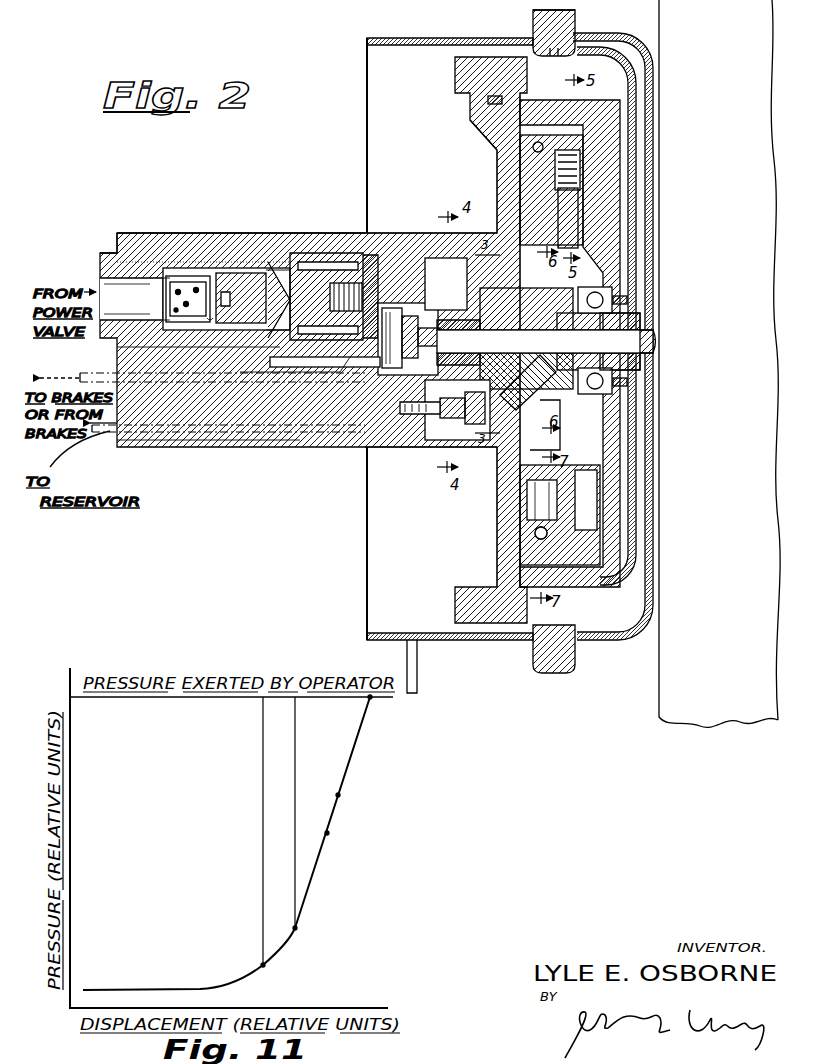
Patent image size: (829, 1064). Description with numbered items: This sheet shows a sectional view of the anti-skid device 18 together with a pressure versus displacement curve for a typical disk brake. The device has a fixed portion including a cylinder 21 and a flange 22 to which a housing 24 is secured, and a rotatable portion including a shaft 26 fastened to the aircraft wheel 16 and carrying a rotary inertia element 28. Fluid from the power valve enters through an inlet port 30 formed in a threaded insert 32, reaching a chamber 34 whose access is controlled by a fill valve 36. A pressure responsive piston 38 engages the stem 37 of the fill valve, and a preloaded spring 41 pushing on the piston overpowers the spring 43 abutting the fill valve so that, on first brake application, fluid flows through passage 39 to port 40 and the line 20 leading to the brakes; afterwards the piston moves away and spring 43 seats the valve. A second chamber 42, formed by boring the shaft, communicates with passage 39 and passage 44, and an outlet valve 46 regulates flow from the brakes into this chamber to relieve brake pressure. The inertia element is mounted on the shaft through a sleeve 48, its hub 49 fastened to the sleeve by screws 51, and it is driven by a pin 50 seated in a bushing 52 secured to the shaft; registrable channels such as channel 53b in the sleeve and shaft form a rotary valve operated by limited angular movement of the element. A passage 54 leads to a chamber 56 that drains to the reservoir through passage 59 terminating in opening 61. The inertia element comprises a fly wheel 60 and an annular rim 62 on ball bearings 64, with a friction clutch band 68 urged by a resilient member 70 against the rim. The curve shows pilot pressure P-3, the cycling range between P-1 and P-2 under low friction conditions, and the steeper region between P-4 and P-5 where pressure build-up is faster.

In FIG. 2, the aircraft wheel 16 is at (669, 698).
In FIG. 2, the anti-skid device 18 is at (336, 454).
In FIG. 2, the line 20 is at (80, 380).
In FIG. 2, the cylinder 21 is at (372, 236).
In FIG. 2, the flange 22 is at (507, 148).
In FIG. 2, the housing 24 is at (618, 133).
In FIG. 2, the shaft 26 is at (632, 330).
In FIG. 2, the rotary inertia element 28 is at (602, 197).
In FIG. 2, the inlet port 30 is at (108, 289).
In FIG. 2, the insert 32 is at (127, 262).
In FIG. 2, the chamber 34 is at (298, 278).
In FIG. 2, the fill valve 36 is at (237, 290).
In FIG. 2, the stem 37 is at (300, 262).
In FIG. 2, the pressure responsive piston 38 is at (352, 262).
In FIG. 2, the passage 39 is at (280, 420).
In FIG. 2, the port 40 is at (137, 374).
In FIG. 2, the spring 41 is at (355, 237).
In FIG. 2, the second chamber 42 is at (656, 346).
In FIG. 2, the spring 43 is at (192, 285).
In FIG. 2, the passage 44 is at (363, 367).
In FIG. 2, the outlet valve 46 is at (405, 306).
In FIG. 2, the sleeve 48 is at (573, 293).
In FIG. 2, the hub 49 is at (557, 400).
In FIG. 2, the pin 50 is at (453, 257).
In FIG. 2, the screws 51 is at (527, 370).
In FIG. 2, the bushing 52 is at (463, 300).
In FIG. 2, the registrable channel 53b is at (606, 344).
In FIG. 2, the passage 54 is at (495, 360).
In FIG. 2, the chamber 56 is at (457, 413).
In FIG. 2, the passage 59 is at (200, 430).
In FIG. 2, the fly wheel 60 is at (533, 200).
In FIG. 2, the opening 61 is at (107, 432).
In FIG. 2, the annular rim 62 is at (533, 123).
In FIG. 2, the ball bearings 64 is at (537, 147).
In FIG. 2, the band 68 is at (530, 143).
In FIG. 2, the resilient member 70 is at (575, 166).
In FIG. 11, the pressure P1 P-1 is at (297, 930).
In FIG. 11, the pressure P2 P-2 is at (263, 968).
In FIG. 11, the pressure P3 P-3 is at (371, 700).
In FIG. 11, the pressure P4 P-4 is at (328, 836).
In FIG. 11, the pressure P5 P-5 is at (340, 793).